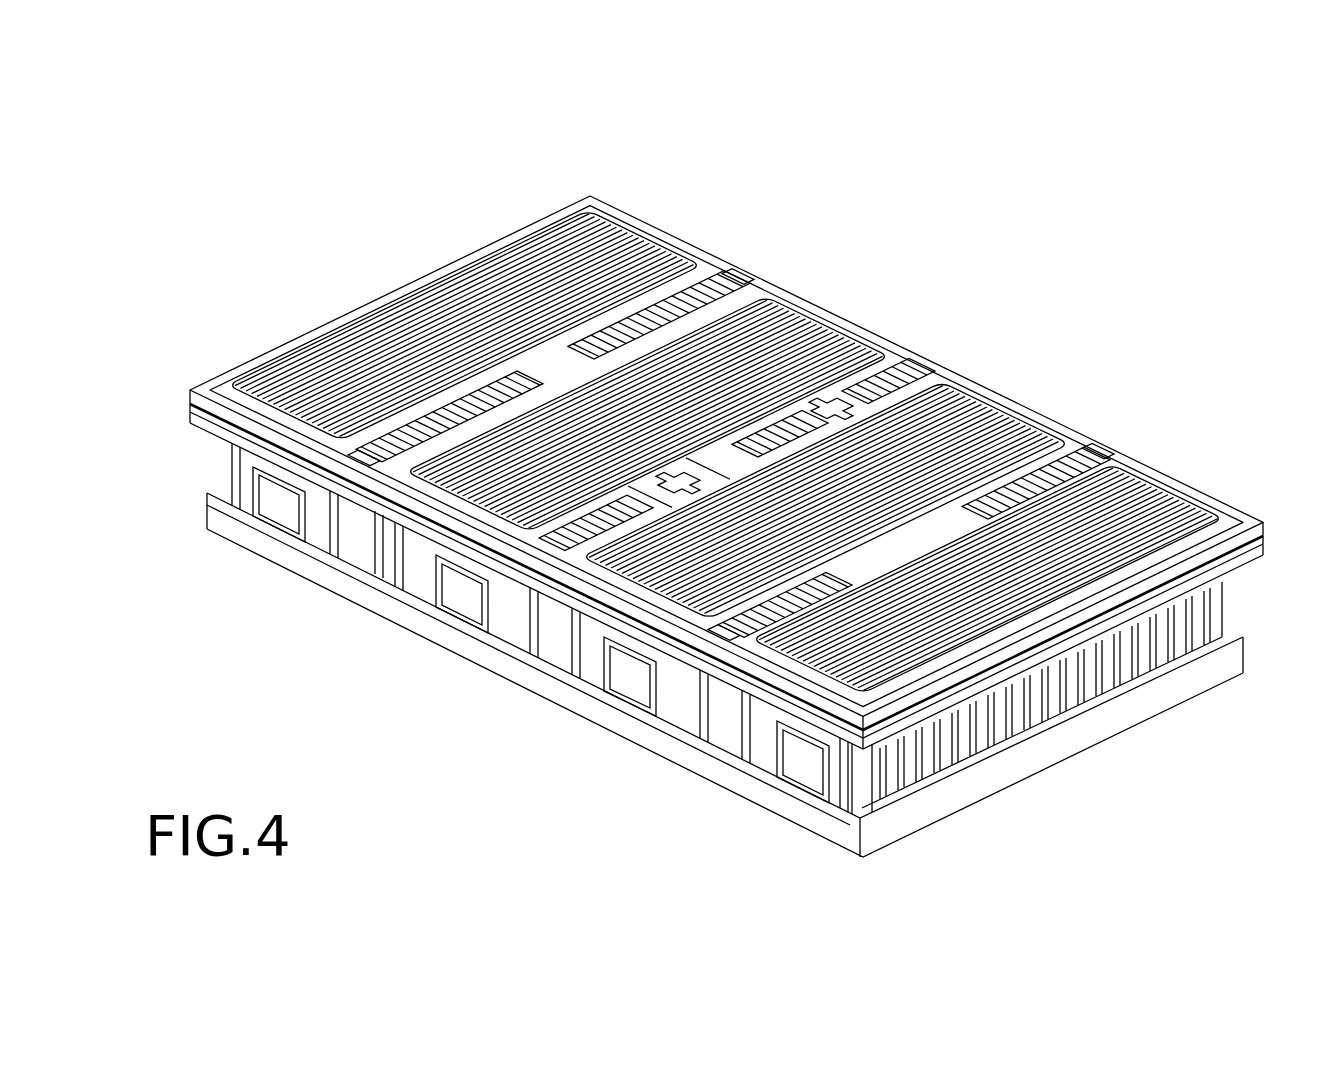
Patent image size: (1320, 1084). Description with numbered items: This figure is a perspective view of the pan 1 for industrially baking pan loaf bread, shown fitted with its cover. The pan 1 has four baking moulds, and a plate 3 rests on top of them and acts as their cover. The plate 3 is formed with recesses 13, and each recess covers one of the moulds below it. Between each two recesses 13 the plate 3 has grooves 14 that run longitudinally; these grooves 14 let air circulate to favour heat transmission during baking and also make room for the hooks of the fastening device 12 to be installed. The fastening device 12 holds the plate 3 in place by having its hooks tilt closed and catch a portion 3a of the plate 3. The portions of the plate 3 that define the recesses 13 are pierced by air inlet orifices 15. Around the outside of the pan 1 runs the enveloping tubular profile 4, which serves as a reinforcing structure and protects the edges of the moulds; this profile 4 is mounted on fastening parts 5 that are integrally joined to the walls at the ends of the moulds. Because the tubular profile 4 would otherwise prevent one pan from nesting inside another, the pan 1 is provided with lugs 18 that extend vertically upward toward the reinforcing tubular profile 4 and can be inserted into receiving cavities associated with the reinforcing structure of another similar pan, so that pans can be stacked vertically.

The pan 1 is at (915, 292).
The plate 3 is at (213, 410).
The portion of the plate 3a is at (830, 410).
The enveloping tubular profile 4 is at (317, 565).
The fastening parts 5 is at (625, 688).
The fastening device 12 is at (800, 383).
The recesses 13 is at (410, 343).
The grooves 14 is at (408, 425).
The air inlet orifices 15 is at (500, 273).
The lugs 18 is at (735, 265).